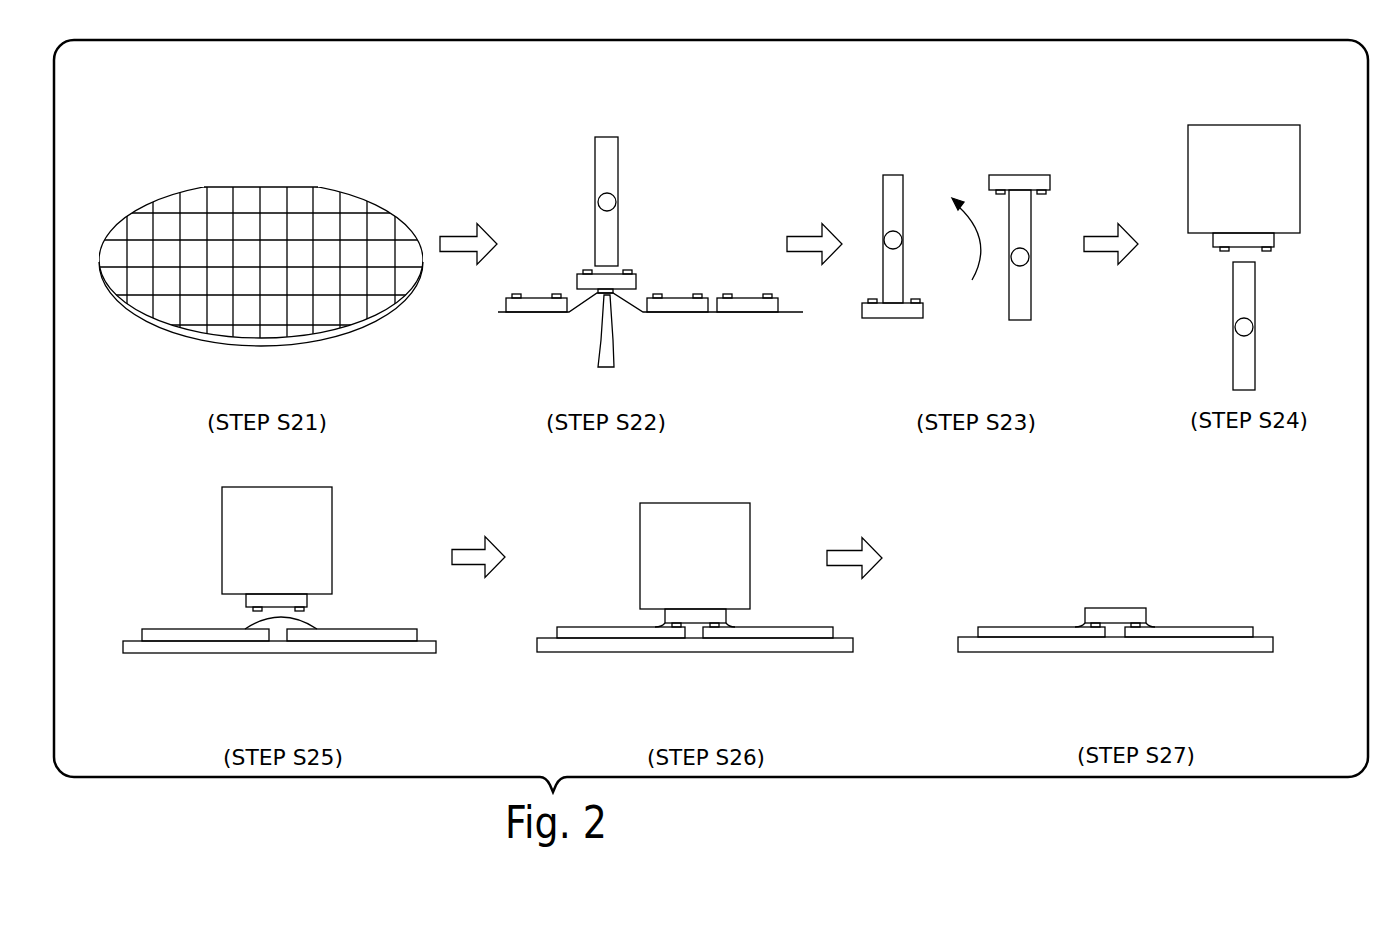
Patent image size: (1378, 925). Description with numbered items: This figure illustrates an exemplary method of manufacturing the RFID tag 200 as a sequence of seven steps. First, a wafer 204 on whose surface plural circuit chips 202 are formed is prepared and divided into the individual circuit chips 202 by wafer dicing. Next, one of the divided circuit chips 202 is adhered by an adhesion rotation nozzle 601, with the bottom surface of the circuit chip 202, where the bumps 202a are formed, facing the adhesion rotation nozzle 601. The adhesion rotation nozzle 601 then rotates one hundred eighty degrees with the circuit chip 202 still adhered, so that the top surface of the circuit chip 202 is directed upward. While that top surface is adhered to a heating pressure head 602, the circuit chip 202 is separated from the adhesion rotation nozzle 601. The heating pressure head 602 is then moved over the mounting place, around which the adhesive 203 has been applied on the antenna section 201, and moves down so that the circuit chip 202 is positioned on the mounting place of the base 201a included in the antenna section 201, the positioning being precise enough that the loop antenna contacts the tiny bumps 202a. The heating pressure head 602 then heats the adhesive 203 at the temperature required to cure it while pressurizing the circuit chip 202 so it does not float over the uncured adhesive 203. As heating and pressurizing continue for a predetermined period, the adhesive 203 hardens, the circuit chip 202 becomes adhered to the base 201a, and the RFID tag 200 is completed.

The wafer 204 is at (345, 135).
The circuit chip 202 is at (273, 198).
The bumps 202a is at (586, 270).
The adhesion rotation nozzle 601 is at (619, 167).
The heating pressure head 602 is at (1228, 125).
The adhesive 203 is at (262, 622).
The antenna section 201 is at (138, 680).
The RFID tag 200 is at (1204, 582).
The base 201a is at (1263, 635).